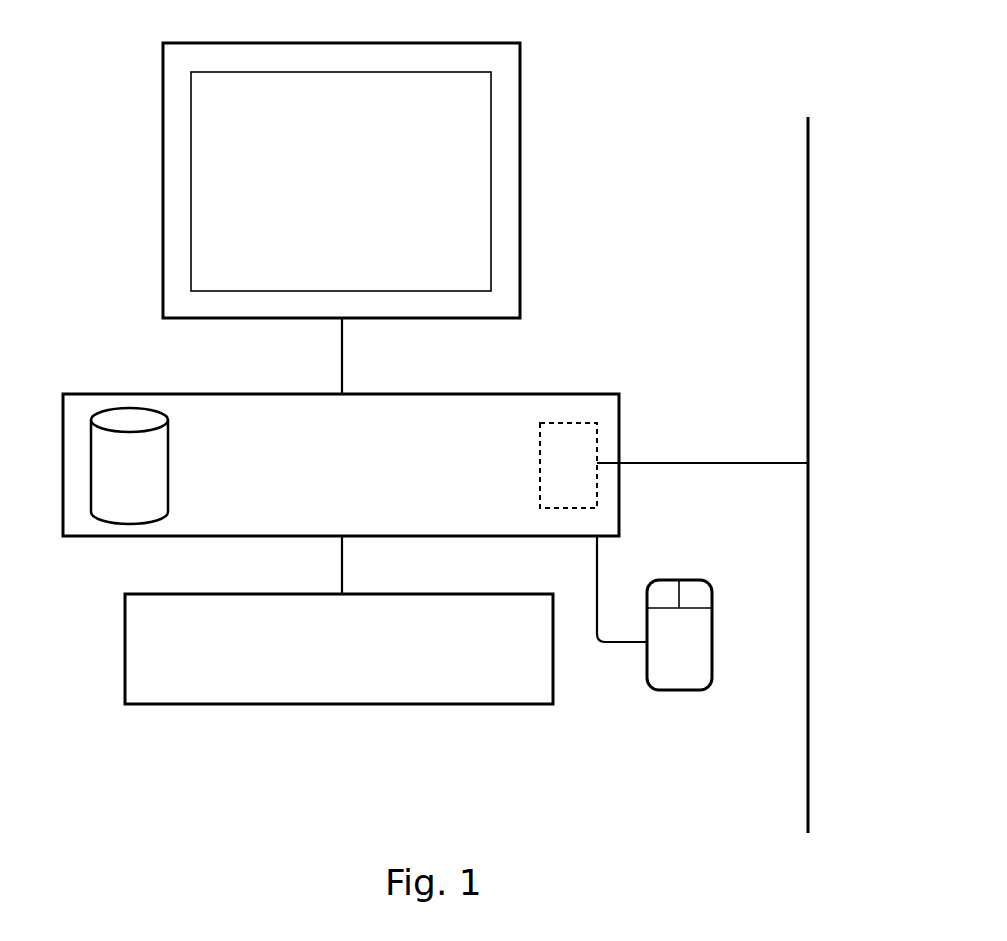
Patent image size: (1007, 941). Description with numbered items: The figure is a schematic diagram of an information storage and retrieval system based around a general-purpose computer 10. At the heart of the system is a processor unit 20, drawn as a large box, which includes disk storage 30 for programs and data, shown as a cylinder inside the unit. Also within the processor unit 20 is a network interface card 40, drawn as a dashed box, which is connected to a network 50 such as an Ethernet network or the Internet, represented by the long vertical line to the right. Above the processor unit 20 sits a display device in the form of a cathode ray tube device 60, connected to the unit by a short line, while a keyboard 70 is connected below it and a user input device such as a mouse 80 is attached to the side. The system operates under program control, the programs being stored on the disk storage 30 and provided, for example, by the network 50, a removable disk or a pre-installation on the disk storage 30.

The general-purpose computer 10 is at (71, 131).
The processor unit 20 is at (537, 394).
The disk storage 30 is at (129, 405).
The network interface card 40 is at (597, 447).
The network 50 is at (808, 338).
The cathode ray tube device 60 is at (520, 164).
The keyboard 70 is at (497, 704).
The mouse 80 is at (673, 690).